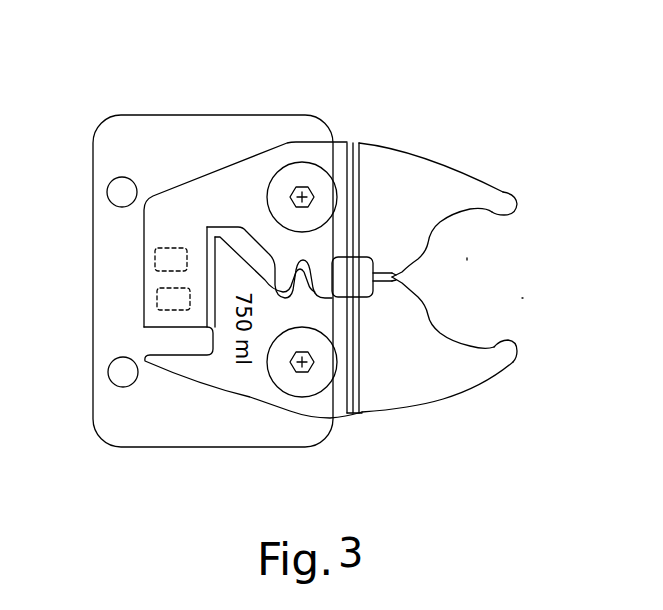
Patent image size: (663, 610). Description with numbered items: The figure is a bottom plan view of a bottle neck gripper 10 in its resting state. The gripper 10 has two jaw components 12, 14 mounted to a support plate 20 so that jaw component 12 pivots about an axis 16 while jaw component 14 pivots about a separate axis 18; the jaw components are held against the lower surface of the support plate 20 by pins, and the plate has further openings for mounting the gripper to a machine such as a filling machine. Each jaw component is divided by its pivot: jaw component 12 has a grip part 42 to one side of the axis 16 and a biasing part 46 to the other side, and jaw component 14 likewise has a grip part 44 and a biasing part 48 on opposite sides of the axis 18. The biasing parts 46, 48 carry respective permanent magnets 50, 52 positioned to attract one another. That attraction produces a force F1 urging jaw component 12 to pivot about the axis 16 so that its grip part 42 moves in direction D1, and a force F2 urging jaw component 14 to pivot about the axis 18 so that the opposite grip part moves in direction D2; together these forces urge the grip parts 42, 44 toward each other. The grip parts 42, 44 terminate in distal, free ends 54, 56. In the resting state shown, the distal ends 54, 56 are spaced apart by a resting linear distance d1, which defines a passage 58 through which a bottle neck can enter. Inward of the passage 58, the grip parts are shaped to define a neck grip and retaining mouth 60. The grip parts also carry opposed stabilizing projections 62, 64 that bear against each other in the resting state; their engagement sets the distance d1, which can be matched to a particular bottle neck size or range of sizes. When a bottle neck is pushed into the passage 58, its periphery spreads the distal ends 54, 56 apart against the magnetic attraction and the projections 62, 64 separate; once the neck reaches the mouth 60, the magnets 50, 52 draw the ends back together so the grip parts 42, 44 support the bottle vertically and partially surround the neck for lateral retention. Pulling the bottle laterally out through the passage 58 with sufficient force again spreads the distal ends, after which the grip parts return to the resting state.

The bottle neck gripper 10 is at (435, 58).
The jaw component 12 is at (350, 416).
The jaw component 14 is at (371, 145).
The axis 16 is at (296, 373).
The axis 18 is at (304, 195).
The support plate 20 is at (182, 128).
The grip part 42 is at (435, 383).
The grip part 44 is at (437, 162).
The biasing part 46 is at (223, 358).
The biasing part 48 is at (228, 180).
The permanent magnet 50 is at (157, 258).
The permanent magnet 52 is at (145, 305).
The distal end 54 is at (510, 360).
The distal end 56 is at (509, 190).
The passage 58 is at (524, 298).
The neck grip and retaining mouth 60 is at (467, 257).
The stabilizing projection 62 is at (390, 284).
The stabilizing projection 64 is at (388, 274).
The force F1 is at (177, 266).
The force F2 is at (165, 280).
The direction D1 is at (522, 328).
The direction D2 is at (522, 196).
The resting linear distance d1 is at (503, 220).